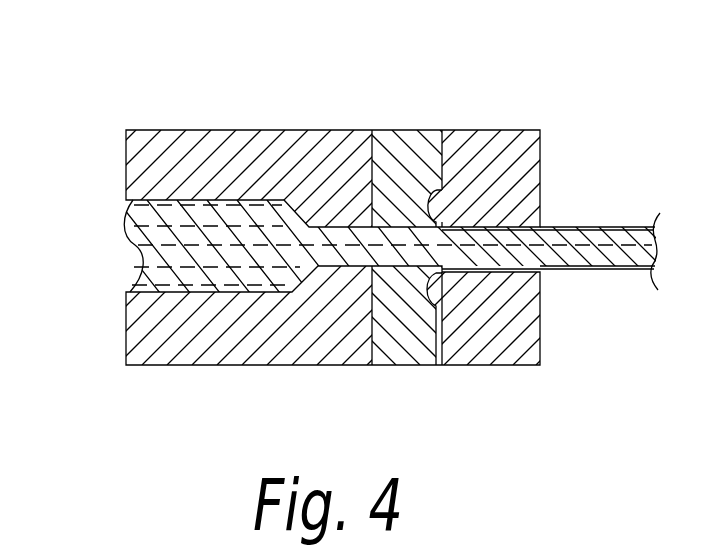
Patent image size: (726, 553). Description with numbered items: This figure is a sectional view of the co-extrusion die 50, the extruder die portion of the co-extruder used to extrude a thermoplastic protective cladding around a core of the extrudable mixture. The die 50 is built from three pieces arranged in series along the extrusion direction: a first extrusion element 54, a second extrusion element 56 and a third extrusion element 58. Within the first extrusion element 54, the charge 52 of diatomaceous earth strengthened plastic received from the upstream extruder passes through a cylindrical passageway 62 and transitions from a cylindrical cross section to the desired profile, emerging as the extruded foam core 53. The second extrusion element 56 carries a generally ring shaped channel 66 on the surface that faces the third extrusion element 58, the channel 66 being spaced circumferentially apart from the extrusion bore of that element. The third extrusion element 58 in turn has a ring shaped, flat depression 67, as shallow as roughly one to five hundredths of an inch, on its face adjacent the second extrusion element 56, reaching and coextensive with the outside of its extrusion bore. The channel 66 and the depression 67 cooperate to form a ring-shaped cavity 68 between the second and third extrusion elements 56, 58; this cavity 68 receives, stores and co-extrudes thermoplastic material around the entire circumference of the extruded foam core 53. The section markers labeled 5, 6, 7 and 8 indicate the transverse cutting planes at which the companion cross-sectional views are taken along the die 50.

The co-extruder die 50 is at (105, 162).
The charge of diatomaceous earth strengthened plastic 52 is at (138, 234).
The extruded foam core 53 is at (363, 365).
The first extrusion element 54 is at (145, 330).
The second extrusion element 56 is at (414, 145).
The third extrusion element 58 is at (530, 165).
The cylindrical passageway 62 is at (122, 268).
The ring shaped channel 66 is at (438, 190).
The ring shaped flat depression 67 is at (440, 290).
The ring-shaped cavity 68 is at (435, 306).
The section line 5- 5 is at (196, 97).
The section line 6- 6 is at (352, 97).
The section line 7- 7 is at (514, 100).
The section line 8- 8 is at (648, 195).